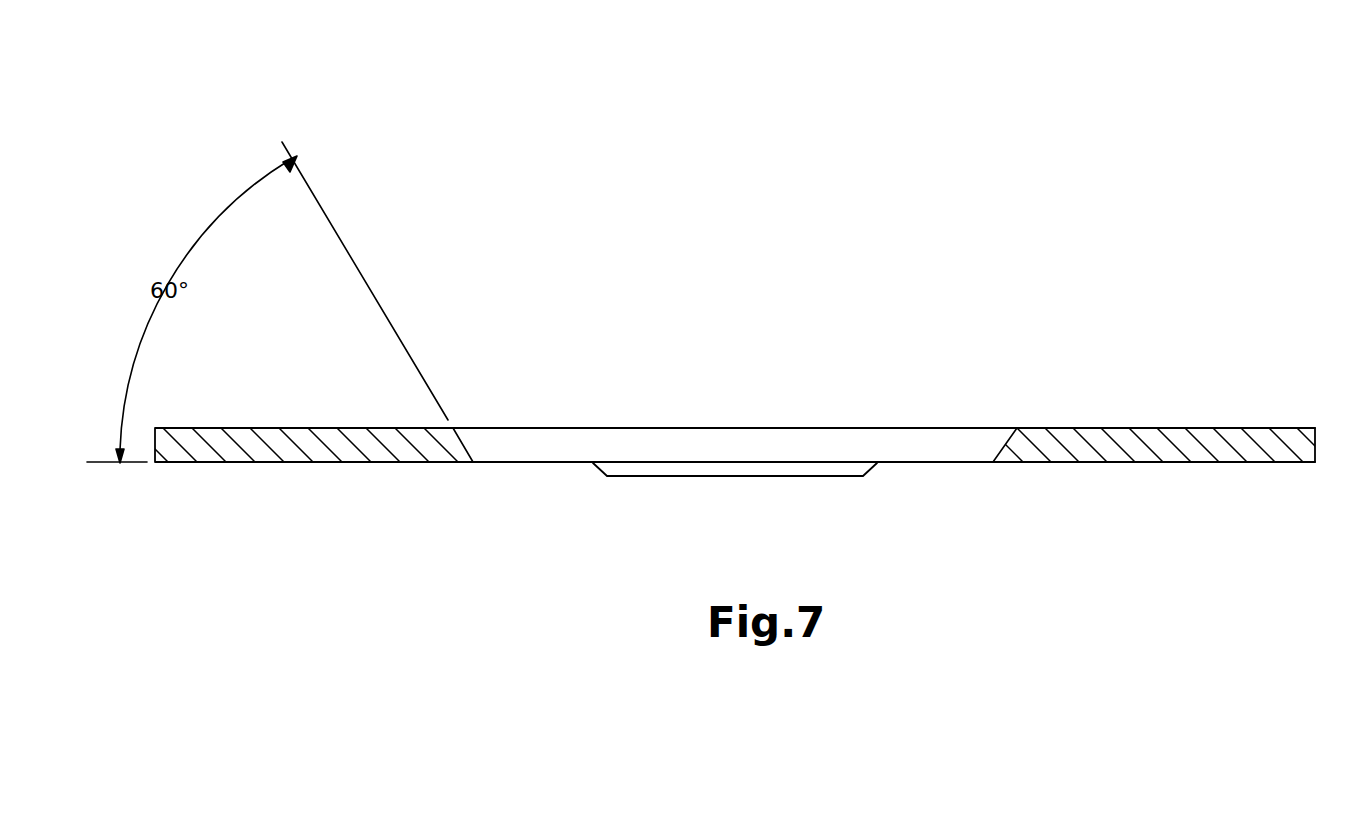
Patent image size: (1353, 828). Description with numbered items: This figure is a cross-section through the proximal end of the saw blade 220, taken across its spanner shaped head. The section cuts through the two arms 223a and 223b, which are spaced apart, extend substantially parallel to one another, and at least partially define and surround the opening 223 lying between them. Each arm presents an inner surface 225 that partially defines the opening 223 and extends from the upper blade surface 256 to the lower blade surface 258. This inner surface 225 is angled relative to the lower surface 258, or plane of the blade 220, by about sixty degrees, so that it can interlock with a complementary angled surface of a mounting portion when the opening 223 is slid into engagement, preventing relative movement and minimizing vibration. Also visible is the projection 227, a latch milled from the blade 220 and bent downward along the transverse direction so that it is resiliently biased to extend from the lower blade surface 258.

The blade 220 is at (219, 162).
The opening 223 is at (755, 438).
The arm 223a is at (1225, 427).
The arm 223b is at (268, 427).
The inner surface 225 is at (470, 446).
The projection 227 is at (782, 477).
The upper blade surface 256 is at (1115, 427).
The lower blade surface 258 is at (1202, 463).